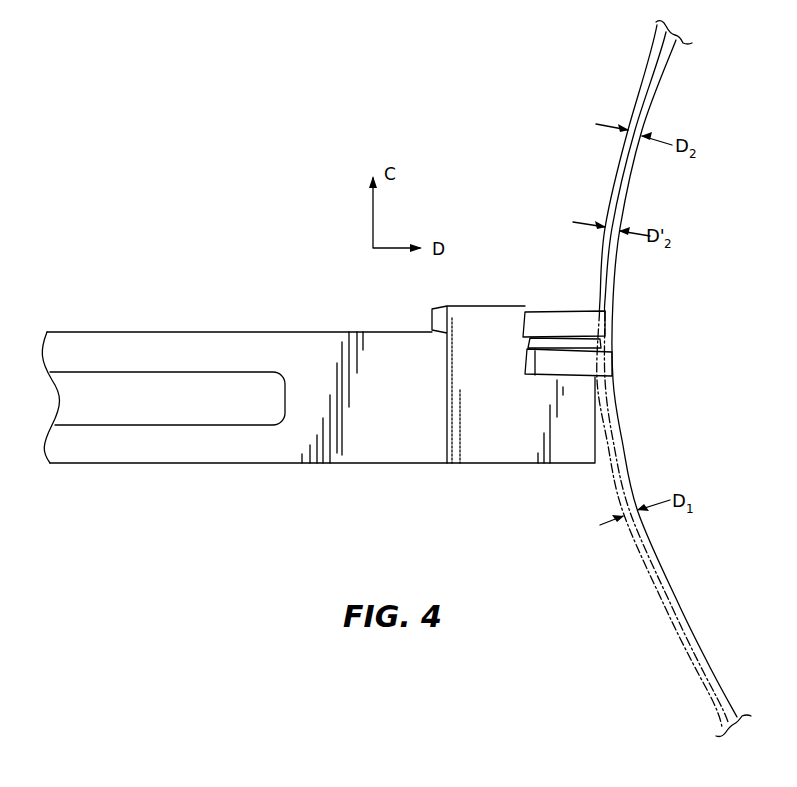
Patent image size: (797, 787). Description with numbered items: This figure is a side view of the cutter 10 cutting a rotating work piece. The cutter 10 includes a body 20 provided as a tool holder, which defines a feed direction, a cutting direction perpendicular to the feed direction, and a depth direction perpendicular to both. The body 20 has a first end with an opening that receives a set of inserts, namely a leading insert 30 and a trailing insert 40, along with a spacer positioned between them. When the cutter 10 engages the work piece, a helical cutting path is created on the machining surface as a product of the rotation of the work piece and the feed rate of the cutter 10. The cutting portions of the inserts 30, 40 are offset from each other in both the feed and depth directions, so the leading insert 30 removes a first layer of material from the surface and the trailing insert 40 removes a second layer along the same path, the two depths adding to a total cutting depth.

The cutter 10 is at (301, 284).
The body 20 is at (392, 432).
The leading insert 30 is at (567, 323).
The trailing insert 40 is at (577, 365).